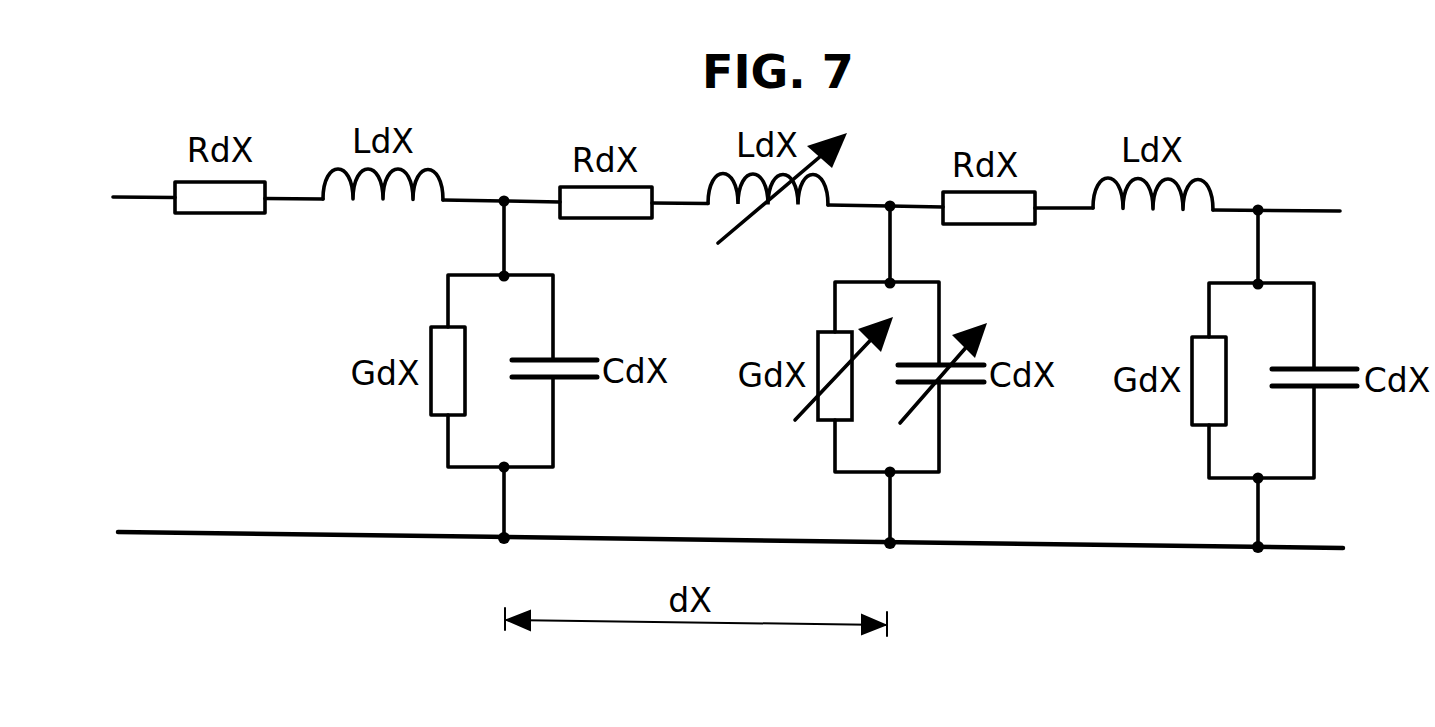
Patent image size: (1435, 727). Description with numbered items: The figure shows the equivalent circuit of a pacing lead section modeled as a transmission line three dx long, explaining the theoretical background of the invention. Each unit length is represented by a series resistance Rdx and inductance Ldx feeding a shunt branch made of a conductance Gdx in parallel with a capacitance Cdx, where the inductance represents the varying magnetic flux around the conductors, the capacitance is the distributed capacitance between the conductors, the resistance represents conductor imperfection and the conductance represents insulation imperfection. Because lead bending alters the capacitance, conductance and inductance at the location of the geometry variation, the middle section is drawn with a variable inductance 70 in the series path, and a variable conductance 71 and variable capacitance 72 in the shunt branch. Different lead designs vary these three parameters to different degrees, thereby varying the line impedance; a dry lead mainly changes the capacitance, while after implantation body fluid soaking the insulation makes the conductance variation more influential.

The variable inductance 70 is at (777, 188).
The variable conductance 71 is at (834, 366).
The variable capacitance 72 is at (942, 373).